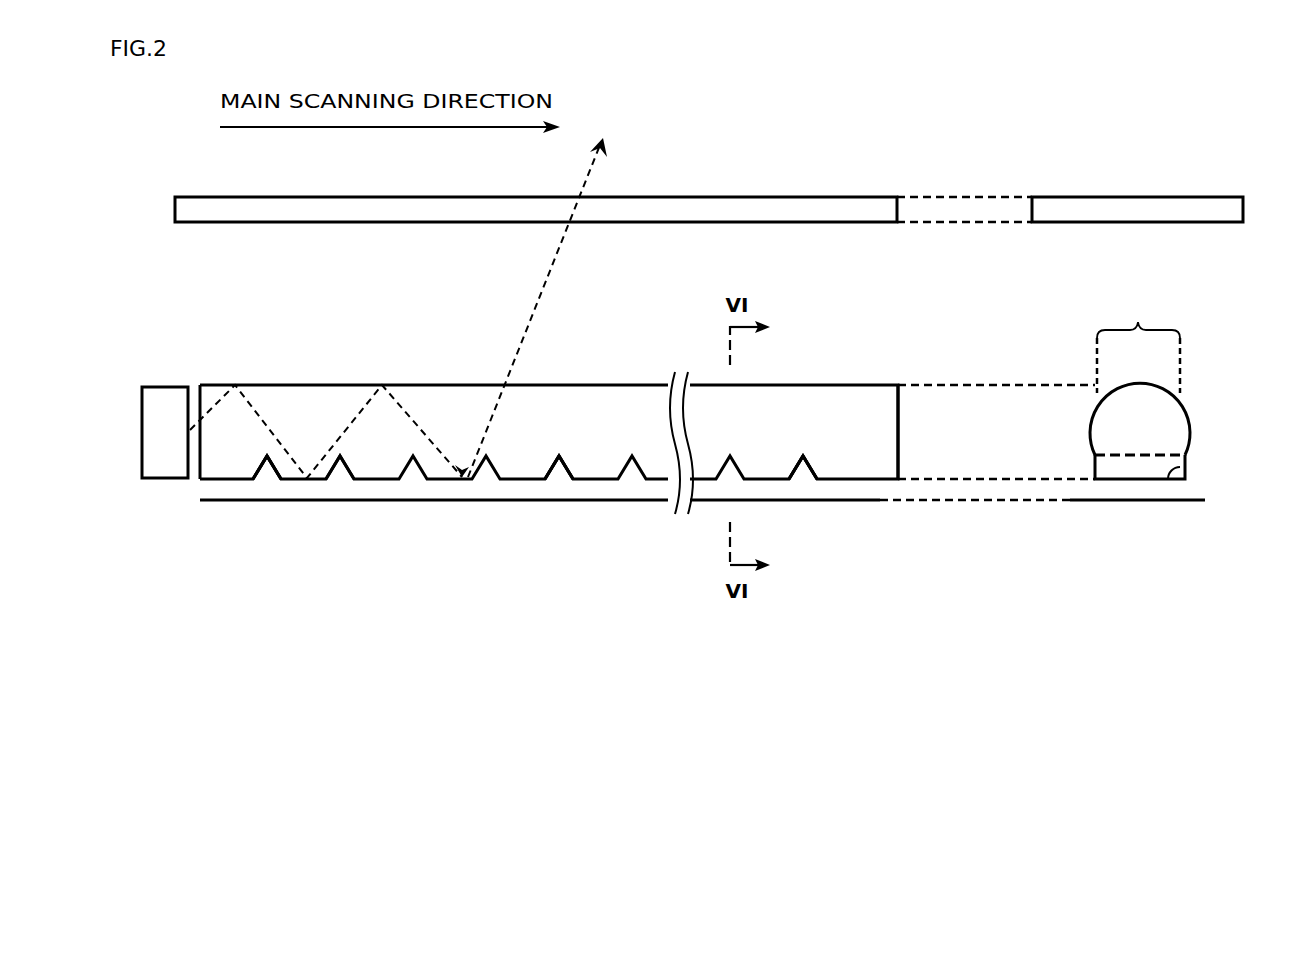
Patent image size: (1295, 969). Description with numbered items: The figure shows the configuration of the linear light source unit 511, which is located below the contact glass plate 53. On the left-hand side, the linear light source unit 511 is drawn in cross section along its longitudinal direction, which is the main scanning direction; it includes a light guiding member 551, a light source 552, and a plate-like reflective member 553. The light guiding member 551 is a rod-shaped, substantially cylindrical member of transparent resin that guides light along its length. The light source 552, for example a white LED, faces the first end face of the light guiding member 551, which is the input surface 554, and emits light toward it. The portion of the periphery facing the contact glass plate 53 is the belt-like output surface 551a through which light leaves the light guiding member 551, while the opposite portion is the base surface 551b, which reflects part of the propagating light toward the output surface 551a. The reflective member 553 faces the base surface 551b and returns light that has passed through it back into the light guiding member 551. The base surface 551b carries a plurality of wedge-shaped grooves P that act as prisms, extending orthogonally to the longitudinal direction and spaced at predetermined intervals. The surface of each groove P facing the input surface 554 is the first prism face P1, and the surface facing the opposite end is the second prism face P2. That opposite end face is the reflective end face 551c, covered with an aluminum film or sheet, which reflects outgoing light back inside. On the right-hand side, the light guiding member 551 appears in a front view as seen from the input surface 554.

The contact glass plate 53 is at (712, 196).
The linear light source unit 511 is at (189, 318).
The light guiding member 551 is at (313, 384).
The output surface 551a is at (437, 385).
The base surface 551b is at (841, 482).
The reflective end face 551c is at (899, 420).
The light source 552 is at (140, 460).
The reflective member 553 is at (376, 504).
The input surface 554 is at (192, 398).
The grooves P is at (267, 452).
The first prism face P1 is at (258, 465).
The second prism face P2 is at (278, 465).